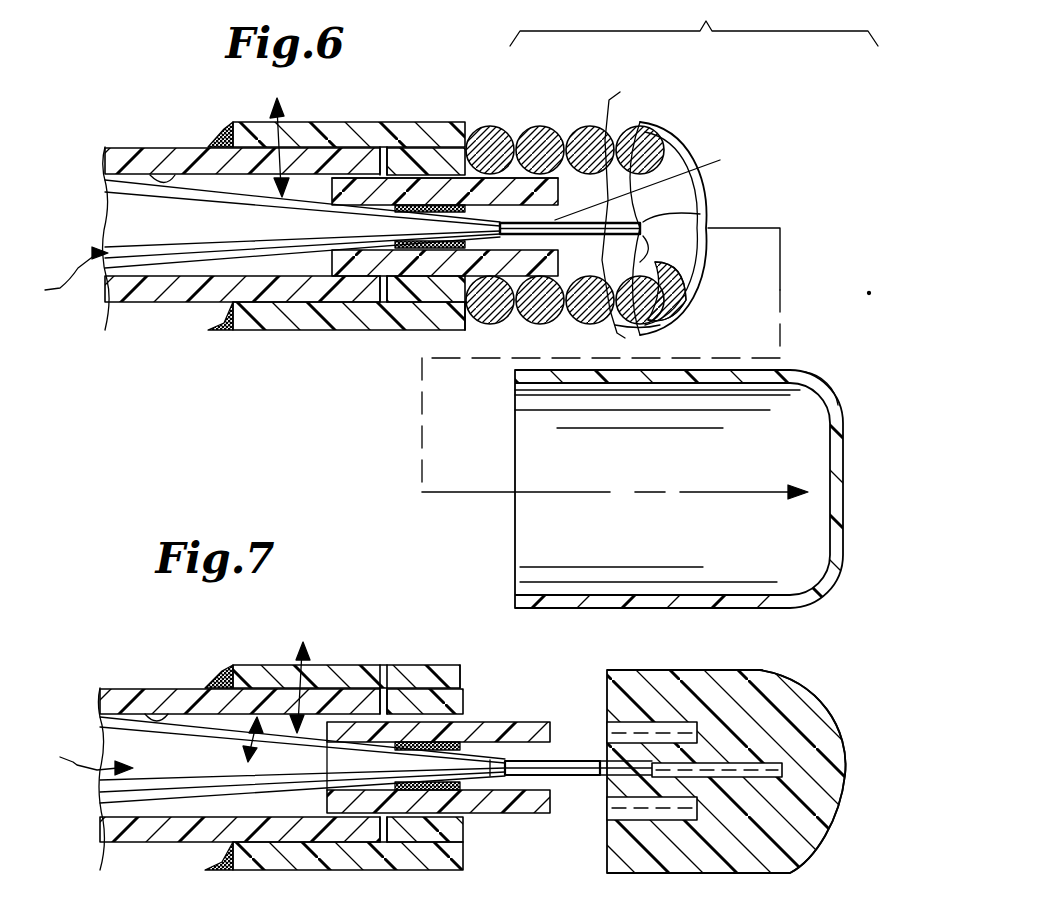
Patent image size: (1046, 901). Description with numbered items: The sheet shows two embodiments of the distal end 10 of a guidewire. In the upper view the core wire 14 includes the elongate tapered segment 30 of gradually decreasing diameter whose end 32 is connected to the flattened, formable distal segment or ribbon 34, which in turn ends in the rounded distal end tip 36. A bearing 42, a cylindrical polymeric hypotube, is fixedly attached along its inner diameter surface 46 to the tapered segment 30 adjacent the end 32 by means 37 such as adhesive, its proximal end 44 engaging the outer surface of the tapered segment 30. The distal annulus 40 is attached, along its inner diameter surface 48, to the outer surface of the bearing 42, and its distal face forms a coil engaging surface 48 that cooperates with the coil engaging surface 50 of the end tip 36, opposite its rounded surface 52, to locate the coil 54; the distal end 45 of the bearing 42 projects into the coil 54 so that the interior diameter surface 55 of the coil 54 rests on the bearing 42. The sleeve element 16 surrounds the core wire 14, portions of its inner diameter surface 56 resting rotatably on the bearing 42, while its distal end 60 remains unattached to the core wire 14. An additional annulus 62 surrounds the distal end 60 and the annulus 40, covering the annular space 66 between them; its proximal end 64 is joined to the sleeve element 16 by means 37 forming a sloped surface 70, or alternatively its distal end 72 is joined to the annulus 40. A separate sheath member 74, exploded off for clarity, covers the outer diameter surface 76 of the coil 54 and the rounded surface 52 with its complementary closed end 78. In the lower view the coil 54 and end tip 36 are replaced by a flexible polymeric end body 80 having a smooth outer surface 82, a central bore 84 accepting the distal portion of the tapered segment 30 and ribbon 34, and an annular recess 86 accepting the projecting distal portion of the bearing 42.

In FIG. 6, the distal end 10 is at (656, 112).
In FIG. 7, the distal end 10 is at (352, 655).
In FIG. 6, the core wire 14 is at (63, 276).
In FIG. 7, the core wire 14 is at (84, 761).
In FIG. 6, the sleeve element 16 is at (120, 160).
In FIG. 7, the sleeve element 16 is at (108, 700).
In FIG. 6, the tapered segment 30 is at (211, 228).
In FIG. 7, the tapered segment 30 is at (214, 776).
In FIG. 6, the end of tapered segment 32 is at (465, 330).
In FIG. 7, the end of tapered segment 32 is at (490, 773).
In FIG. 6, the formable distal segment 34 is at (643, 227).
In FIG. 7, the formable distal segment 34 is at (563, 767).
In FIG. 6, the distal end tip 36 is at (680, 165).
In FIG. 6, the attachment means 37 is at (400, 175).
In FIG. 7, the attachment means 37 is at (253, 687).
In FIG. 6, the distal annulus 40 is at (433, 160).
In FIG. 7, the distal annulus 40 is at (458, 700).
In FIG. 6, the bearing 42 is at (510, 187).
In FIG. 7, the bearing 42 is at (530, 807).
In FIG. 6, the proximal end of bearing 44 is at (323, 277).
In FIG. 7, the proximal end of bearing 44 is at (110, 820).
In FIG. 6, the distal end of bearing 45 is at (637, 337).
In FIG. 7, the distal end of bearing 45 is at (550, 800).
In FIG. 6, the inner diameter surface of bearing 46 is at (652, 183).
In FIG. 7, the inner diameter surface of bearing 46 is at (523, 750).
In FIG. 6, the coil engaging surface 48 is at (500, 200).
In FIG. 7, the coil engaging surface 48 is at (463, 717).
In FIG. 6, the coil engaging surface of end tip 50 is at (660, 253).
In FIG. 6, the rounded surface 52 is at (707, 202).
In FIG. 6, the coil 54 is at (557, 177).
In FIG. 6, the interior diameter surface of coil 55 is at (621, 207).
In FIG. 6, the inner diameter surface of sleeve element 56 is at (170, 177).
In FIG. 7, the inner diameter surface of sleeve element 56 is at (145, 717).
In FIG. 6, the distal end of sleeve element 60 is at (383, 302).
In FIG. 7, the distal end of sleeve element 60 is at (427, 830).
In FIG. 6, the additional annulus 62 is at (247, 134).
In FIG. 7, the additional annulus 62 is at (428, 673).
In FIG. 6, the proximal end of additional annulus 64 is at (223, 333).
In FIG. 7, the proximal end of additional annulus 64 is at (227, 868).
In FIG. 6, the annular space 66 is at (323, 180).
In FIG. 7, the annular space 66 is at (380, 700).
In FIG. 6, the sloped surface 70 is at (217, 308).
In FIG. 7, the sloped surface 70 is at (210, 680).
In FIG. 6, the distal end of additional annulus 72 is at (473, 327).
In FIG. 7, the distal end of additional annulus 72 is at (460, 690).
In FIG. 6, the sheath member 74 is at (747, 586).
In FIG. 6, the outer diameter surface of coil 76 is at (647, 603).
In FIG. 6, the closed end 78 is at (840, 407).
In FIG. 7, the flexible end body 80 is at (700, 685).
In FIG. 7, the smooth outer surface 82 is at (780, 672).
In FIG. 7, the central bore 84 is at (790, 763).
In FIG. 7, the annular recess 86 is at (637, 727).